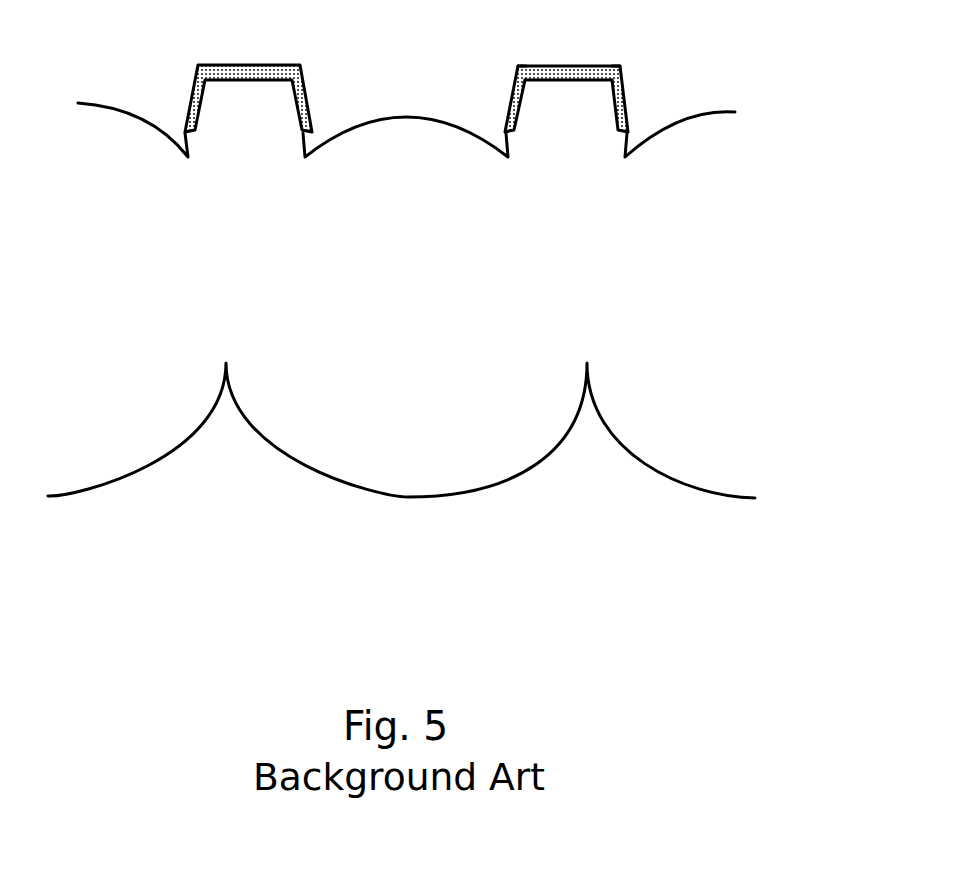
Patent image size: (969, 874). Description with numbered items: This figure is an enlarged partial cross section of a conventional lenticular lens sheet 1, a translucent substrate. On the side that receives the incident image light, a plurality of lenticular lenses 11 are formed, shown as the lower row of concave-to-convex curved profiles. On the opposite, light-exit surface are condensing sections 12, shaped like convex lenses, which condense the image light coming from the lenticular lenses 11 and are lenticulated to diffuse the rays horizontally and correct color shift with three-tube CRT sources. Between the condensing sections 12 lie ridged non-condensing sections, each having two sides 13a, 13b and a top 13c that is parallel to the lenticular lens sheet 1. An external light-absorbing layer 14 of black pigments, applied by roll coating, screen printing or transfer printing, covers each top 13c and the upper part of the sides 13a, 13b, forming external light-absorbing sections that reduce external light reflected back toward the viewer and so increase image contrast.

The lenticular lens sheet 1 is at (445, 308).
The lenticular lenses 11 is at (412, 498).
The condensing sections 12 is at (413, 116).
The side 13a is at (521, 130).
The side 13b is at (617, 128).
The top 13c is at (571, 80).
The external light-absorbing layer 14 is at (440, 137).